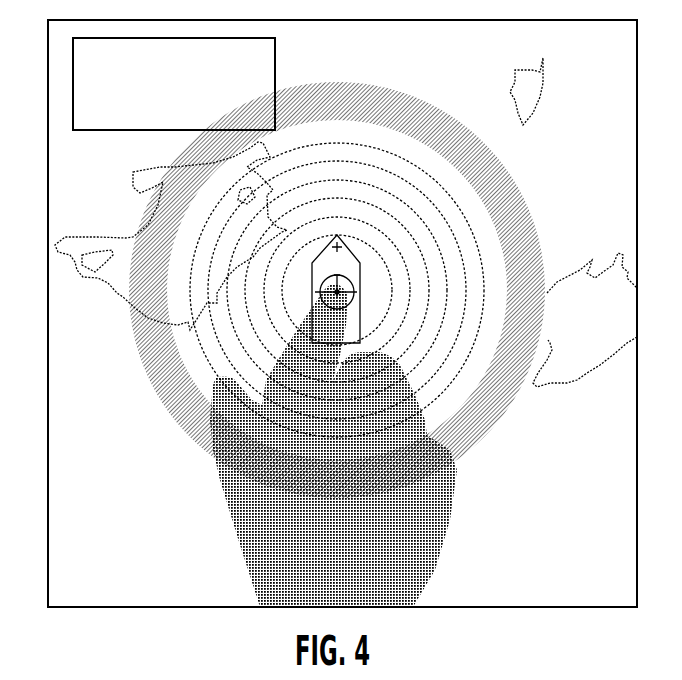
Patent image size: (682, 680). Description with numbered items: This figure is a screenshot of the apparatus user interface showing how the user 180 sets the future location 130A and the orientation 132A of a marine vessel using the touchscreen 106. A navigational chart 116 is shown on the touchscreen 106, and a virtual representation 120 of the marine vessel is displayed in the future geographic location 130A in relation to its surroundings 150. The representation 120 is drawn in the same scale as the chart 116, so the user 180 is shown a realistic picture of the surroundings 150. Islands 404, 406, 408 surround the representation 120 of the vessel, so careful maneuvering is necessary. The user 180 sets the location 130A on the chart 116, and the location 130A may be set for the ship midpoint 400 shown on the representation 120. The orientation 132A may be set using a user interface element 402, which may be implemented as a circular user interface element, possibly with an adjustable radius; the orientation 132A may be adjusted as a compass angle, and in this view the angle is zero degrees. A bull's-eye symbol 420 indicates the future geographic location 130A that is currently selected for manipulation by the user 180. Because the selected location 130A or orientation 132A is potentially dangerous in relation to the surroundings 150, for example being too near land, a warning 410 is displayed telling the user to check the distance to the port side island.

The touchscreen 106 is at (48, 42).
The navigational chart 116 is at (565, 528).
The representation of the marine vessel 120 is at (362, 308).
The future geographic location 130A is at (336, 293).
The orientation 132A is at (337, 242).
The surroundings 150 is at (428, 227).
The user 180 is at (234, 515).
The ship midpoint 400 is at (323, 283).
The user interface element 402 is at (338, 82).
The island 404 is at (88, 237).
The island 406 is at (547, 78).
The island 408 is at (565, 384).
The warning 410 is at (110, 131).
The bull's-eye symbol 420 is at (485, 290).